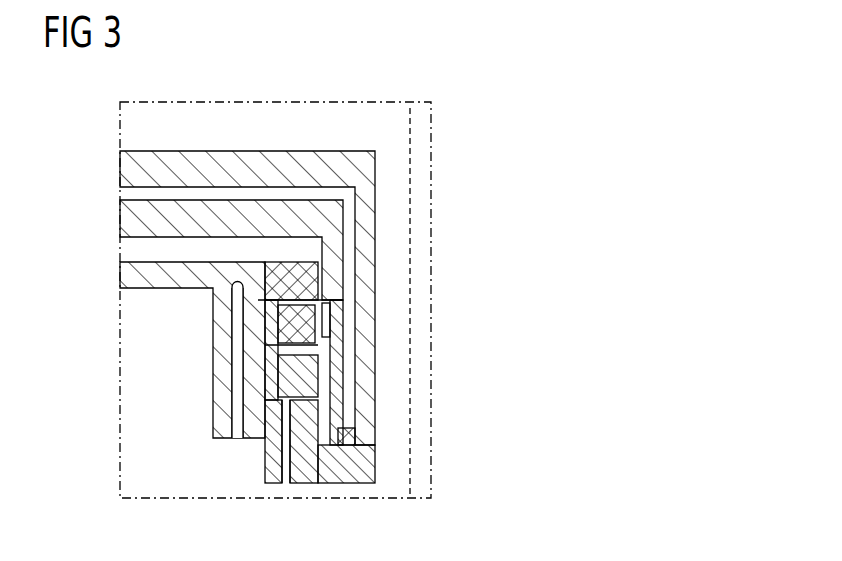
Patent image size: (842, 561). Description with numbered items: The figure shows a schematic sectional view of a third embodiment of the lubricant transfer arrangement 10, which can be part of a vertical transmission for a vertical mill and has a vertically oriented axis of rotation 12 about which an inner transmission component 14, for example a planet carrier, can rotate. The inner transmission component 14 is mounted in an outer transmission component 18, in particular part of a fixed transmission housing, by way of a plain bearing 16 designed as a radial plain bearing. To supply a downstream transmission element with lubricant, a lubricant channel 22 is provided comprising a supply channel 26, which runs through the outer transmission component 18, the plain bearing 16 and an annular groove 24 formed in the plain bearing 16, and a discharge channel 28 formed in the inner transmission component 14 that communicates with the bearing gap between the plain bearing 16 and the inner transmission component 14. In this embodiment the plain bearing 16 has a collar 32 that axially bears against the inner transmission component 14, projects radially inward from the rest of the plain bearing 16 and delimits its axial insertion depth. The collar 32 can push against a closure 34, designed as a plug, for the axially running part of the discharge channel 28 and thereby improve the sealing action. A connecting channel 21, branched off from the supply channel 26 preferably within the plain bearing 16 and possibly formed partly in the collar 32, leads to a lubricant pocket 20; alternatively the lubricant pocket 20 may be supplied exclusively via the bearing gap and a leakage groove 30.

The lubricant transfer arrangement 10 is at (462, 128).
The axis of rotation 12 is at (410, 138).
The inner transmission component 14 is at (258, 162).
The plain bearing 16 is at (320, 485).
The outer transmission component 18 is at (124, 279).
The lubricant pocket 20 is at (318, 296).
The connecting channel 21 is at (233, 357).
The lubricant channel 22 is at (284, 322).
The annular groove 24 is at (345, 362).
The supply channel 26 is at (270, 322).
The discharge channel 28 is at (352, 232).
The leakage groove 30 is at (331, 330).
The collar 32 is at (375, 465).
The closure 34 is at (352, 485).